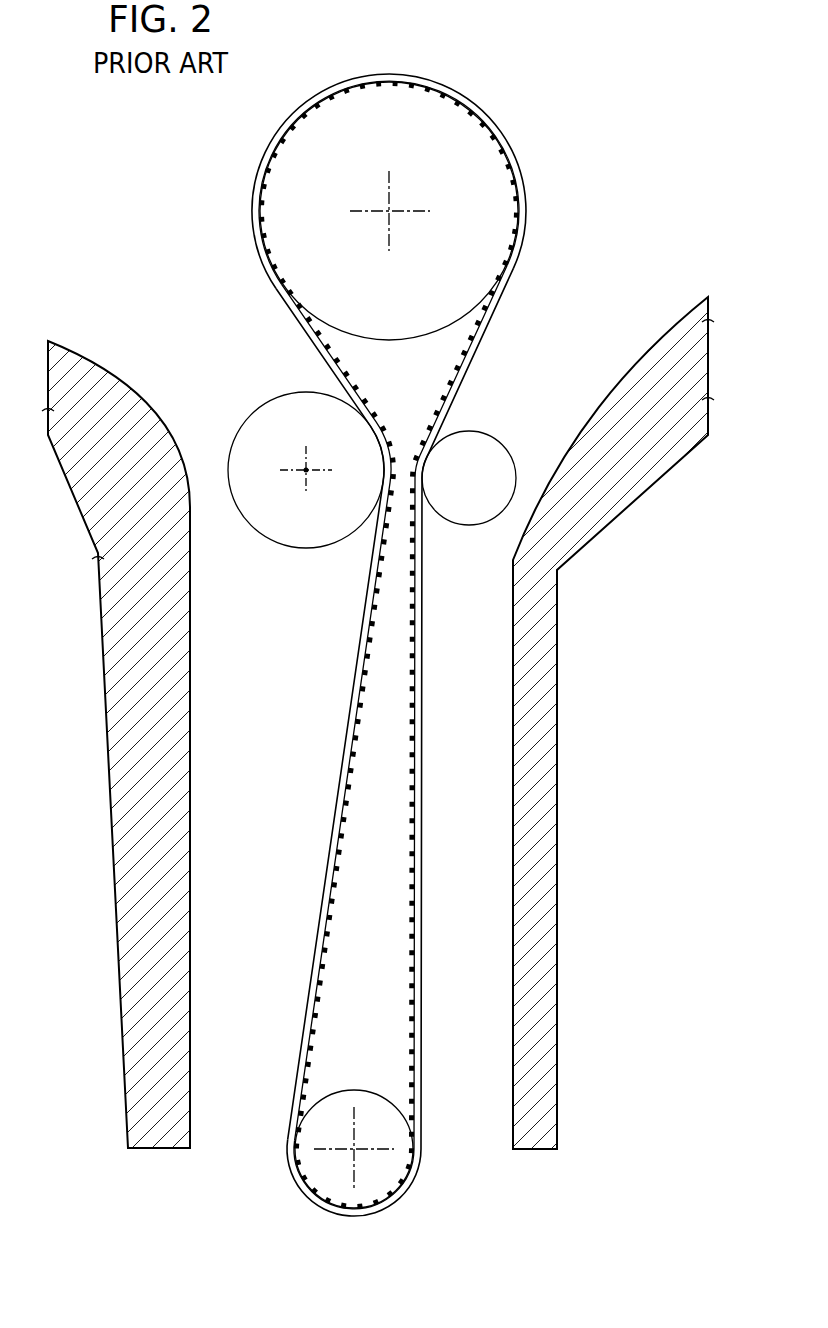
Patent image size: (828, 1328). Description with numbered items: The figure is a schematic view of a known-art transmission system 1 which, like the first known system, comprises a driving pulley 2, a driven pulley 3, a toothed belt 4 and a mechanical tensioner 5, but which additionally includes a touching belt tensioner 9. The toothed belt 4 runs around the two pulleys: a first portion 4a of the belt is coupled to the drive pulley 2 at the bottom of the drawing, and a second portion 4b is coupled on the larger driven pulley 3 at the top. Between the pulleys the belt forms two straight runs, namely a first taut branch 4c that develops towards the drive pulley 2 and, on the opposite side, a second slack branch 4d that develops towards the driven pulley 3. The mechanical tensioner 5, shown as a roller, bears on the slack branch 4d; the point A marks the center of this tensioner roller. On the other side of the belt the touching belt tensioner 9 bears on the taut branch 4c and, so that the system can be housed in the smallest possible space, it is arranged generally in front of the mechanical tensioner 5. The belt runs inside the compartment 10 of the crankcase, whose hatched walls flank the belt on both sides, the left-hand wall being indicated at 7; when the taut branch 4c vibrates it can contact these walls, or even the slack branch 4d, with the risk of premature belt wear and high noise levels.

The transmission system 1 is at (160, 260).
The driving pulley 2 is at (310, 1180).
The driven pulley 3 is at (447, 120).
The toothed belt 4 is at (389, 654).
The first portion 4a is at (358, 1218).
The second portion 4b is at (330, 84).
The taut branch 4c is at (425, 653).
The slack branch 4d is at (350, 695).
The mechanical tensioner 5 is at (296, 469).
The roller axis / pivot point A is at (306, 470).
The left guide member 7 is at (253, 769).
The touching belt tensioner 9 is at (489, 458).
The compartment 10 is at (588, 518).